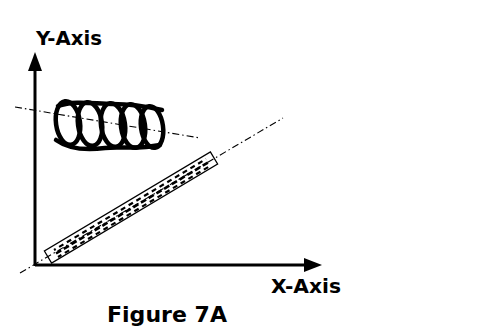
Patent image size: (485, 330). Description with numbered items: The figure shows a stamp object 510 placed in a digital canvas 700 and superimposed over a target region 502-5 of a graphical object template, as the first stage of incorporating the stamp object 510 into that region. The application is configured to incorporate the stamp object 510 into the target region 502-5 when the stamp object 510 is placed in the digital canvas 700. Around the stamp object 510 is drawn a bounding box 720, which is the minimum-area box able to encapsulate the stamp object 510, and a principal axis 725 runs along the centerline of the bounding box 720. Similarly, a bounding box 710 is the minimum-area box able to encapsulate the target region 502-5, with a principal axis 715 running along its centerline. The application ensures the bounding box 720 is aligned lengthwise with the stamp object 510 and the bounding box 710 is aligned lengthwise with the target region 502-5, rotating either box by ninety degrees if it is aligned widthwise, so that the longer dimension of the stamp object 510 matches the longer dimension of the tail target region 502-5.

The digital canvas 700 is at (298, 73).
The stamp object 510 is at (92, 100).
The bounding box 720 is at (137, 107).
The principal axis 725 is at (174, 133).
The principal axis 715 is at (229, 151).
The bounding box 710 is at (198, 174).
The target region 502-5 is at (156, 193).